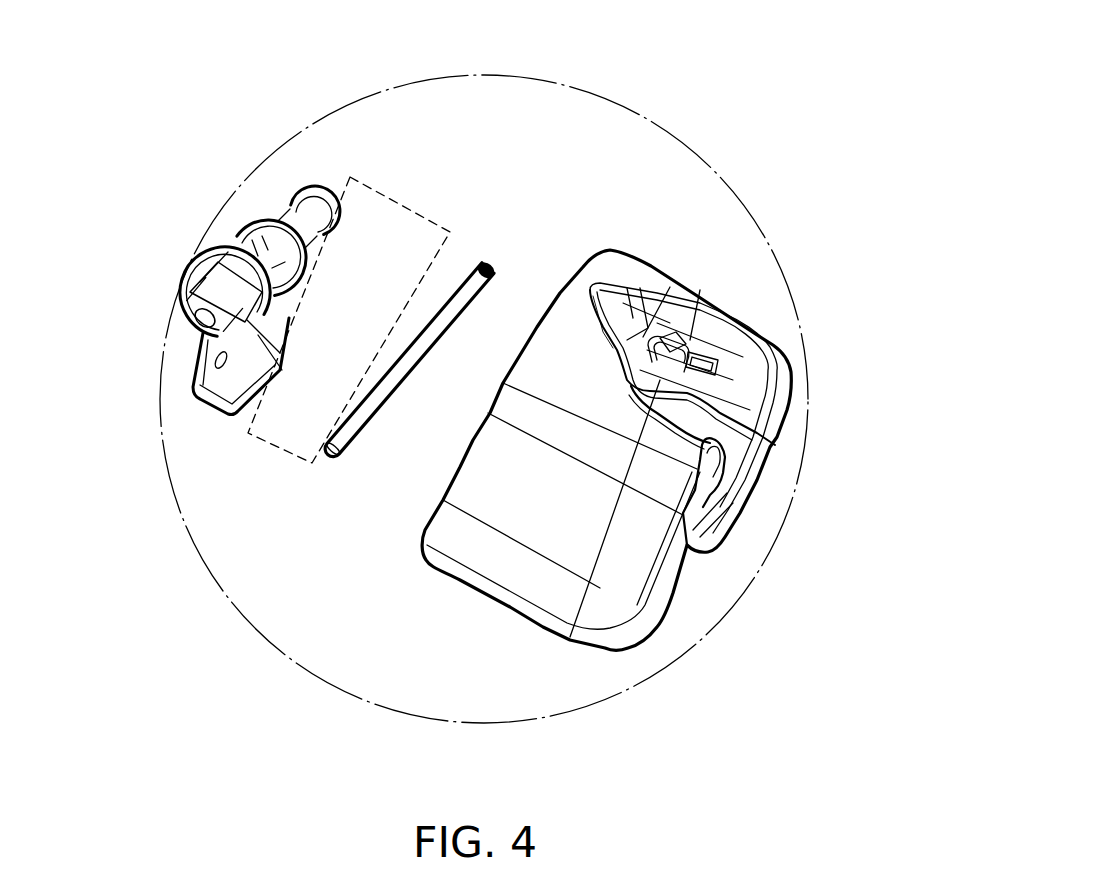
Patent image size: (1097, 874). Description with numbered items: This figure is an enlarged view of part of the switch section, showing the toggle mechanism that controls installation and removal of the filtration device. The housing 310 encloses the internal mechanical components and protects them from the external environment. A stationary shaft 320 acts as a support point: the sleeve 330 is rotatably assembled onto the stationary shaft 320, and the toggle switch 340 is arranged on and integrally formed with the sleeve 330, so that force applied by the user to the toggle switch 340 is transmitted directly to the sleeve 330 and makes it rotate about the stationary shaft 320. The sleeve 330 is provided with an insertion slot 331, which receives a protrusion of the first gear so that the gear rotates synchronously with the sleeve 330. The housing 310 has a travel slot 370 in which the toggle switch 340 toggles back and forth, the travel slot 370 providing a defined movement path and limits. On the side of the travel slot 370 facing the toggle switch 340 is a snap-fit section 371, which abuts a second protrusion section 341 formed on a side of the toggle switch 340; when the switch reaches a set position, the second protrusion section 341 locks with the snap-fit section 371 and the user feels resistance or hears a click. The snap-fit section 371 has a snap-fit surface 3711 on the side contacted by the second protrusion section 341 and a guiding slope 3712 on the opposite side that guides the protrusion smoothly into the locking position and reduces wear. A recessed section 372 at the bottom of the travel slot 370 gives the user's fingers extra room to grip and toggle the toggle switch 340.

The housing 310 is at (557, 593).
The stationary shaft 320 is at (463, 268).
The sleeve 330 is at (191, 333).
The insertion slot 331 is at (196, 276).
The toggle switch 340 is at (166, 459).
The second protrusion section 341 is at (168, 345).
The travel slot 370 is at (707, 422).
The snap-fit section 371 is at (690, 352).
The snap-fit surface 3711 is at (665, 372).
The guiding slope 3712 is at (700, 353).
The recessed section 372 is at (614, 312).